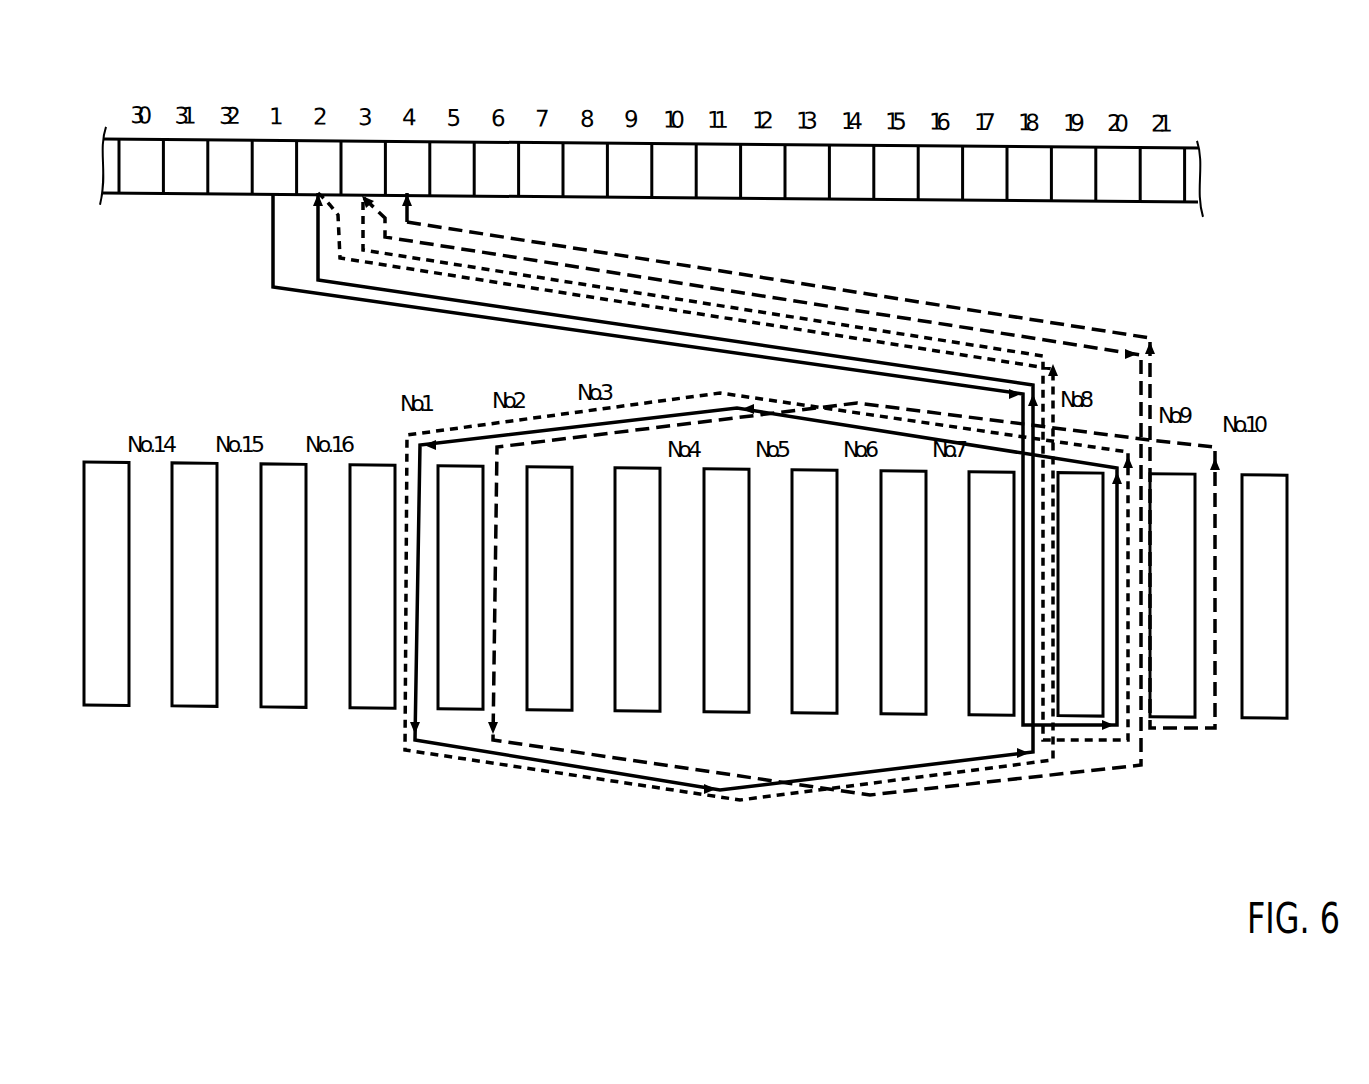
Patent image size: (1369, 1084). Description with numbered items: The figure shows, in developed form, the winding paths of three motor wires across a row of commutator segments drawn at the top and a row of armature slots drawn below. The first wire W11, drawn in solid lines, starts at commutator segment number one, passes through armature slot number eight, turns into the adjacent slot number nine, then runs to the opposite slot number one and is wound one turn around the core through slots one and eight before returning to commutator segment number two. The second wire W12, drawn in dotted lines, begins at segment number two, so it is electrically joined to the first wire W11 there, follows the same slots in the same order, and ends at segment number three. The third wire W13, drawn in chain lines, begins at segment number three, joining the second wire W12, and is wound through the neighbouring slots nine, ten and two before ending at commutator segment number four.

The first wire W11 is at (423, 310).
The second wire W12 is at (613, 250).
The third wire W13 is at (730, 273).